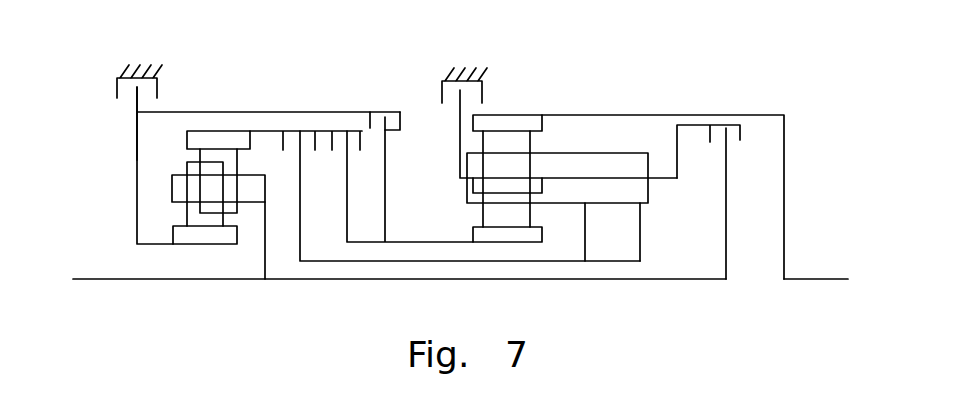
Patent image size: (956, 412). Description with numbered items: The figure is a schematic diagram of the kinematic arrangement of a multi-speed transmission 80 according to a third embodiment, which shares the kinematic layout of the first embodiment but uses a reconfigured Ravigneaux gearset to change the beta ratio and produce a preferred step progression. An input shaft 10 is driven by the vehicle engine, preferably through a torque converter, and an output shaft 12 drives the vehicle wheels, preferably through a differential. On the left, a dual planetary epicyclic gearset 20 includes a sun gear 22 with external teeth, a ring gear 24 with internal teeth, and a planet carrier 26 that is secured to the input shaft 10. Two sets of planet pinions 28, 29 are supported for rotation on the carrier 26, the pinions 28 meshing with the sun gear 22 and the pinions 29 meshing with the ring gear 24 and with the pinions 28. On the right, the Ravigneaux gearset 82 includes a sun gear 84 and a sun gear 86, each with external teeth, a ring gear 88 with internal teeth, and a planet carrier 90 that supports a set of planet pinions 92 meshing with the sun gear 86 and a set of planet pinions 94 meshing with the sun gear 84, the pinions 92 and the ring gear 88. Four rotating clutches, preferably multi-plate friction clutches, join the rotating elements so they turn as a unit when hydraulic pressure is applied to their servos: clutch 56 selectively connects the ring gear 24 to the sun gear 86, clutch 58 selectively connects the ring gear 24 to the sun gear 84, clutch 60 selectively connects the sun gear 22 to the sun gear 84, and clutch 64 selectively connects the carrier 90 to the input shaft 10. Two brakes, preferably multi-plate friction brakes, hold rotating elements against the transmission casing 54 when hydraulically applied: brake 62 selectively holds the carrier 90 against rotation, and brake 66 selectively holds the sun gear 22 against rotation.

The input shaft 10 is at (76, 279).
The output shaft 12 is at (817, 279).
The dual planetary epicyclic gearset 20 is at (217, 96).
The sun gear 22 is at (205, 238).
The ring gear 24 is at (218, 137).
The planet carrier 26 is at (182, 176).
The planet pinions 28 is at (187, 215).
The planet pinions 29 is at (237, 168).
The transmission casing 54 is at (158, 76).
The clutch 56 is at (300, 157).
The clutch 58 is at (347, 150).
The clutch 60 is at (388, 130).
The brake 62 is at (460, 100).
The clutch 64 is at (728, 140).
The brake 66 is at (137, 95).
The transmission 80 is at (335, 162).
The Ravigneaux gearset 82 is at (594, 167).
The sun gear 84 is at (473, 233).
The sun gear 86 is at (612, 232).
The ring gear 88 is at (516, 122).
The planet carrier 90 is at (667, 180).
The planet pinions 92 is at (557, 178).
The planet pinions 94 is at (520, 143).